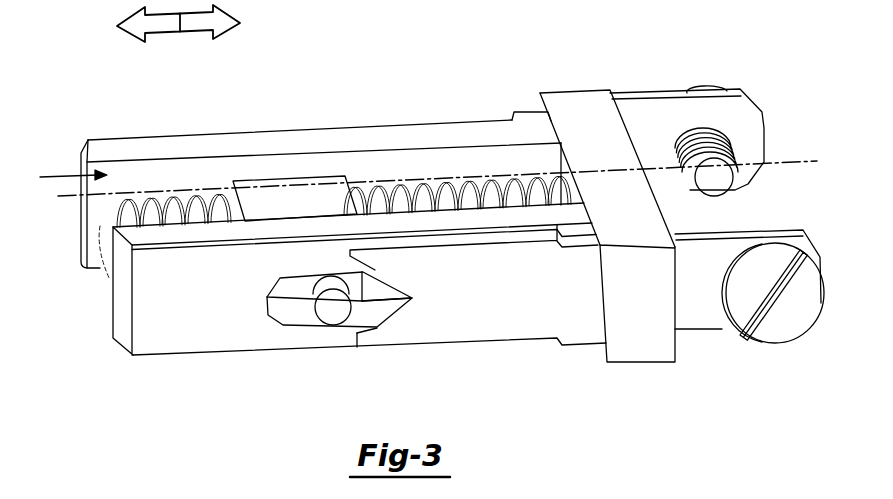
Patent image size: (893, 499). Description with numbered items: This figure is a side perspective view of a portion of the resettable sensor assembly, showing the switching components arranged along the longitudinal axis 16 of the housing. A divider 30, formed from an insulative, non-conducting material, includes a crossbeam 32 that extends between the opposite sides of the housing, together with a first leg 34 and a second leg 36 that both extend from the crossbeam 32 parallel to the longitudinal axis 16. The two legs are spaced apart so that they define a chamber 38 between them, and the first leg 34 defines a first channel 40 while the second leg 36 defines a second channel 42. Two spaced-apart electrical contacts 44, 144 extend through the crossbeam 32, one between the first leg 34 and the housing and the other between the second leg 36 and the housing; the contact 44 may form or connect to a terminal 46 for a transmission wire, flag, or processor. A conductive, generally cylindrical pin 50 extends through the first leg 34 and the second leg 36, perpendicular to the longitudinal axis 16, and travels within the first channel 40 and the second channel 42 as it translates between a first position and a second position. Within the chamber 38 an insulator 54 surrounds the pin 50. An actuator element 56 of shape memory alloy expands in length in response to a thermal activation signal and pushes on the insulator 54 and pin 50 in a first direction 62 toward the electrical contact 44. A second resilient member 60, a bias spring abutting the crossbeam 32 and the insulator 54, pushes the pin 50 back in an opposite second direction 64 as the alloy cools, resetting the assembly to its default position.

The longitudinal axis 16 is at (782, 162).
The divider 30 is at (630, 233).
The crossbeam 32 is at (570, 103).
The first leg 34 is at (165, 143).
The second leg 36 is at (186, 234).
The chamber 38 is at (61, 177).
The first channel 40 is at (338, 118).
The second channel 42 is at (295, 313).
The electrical contact 44 is at (318, 128).
The terminal 46 is at (740, 90).
The pin 50 is at (334, 315).
The insulator 54 is at (279, 208).
The actuator element 56 is at (100, 247).
The second resilient member 60 is at (437, 182).
The first direction 62 is at (207, 31).
The second direction 64 is at (150, 33).
The electrical contact 144 is at (446, 316).